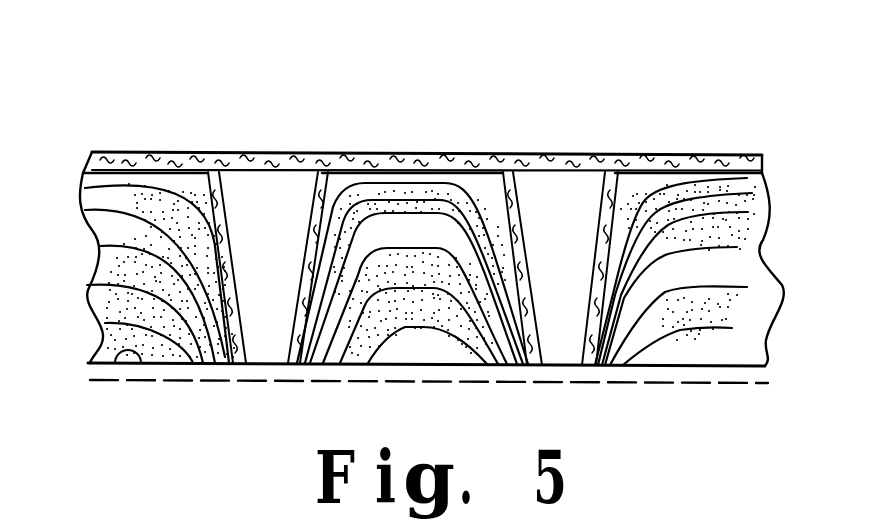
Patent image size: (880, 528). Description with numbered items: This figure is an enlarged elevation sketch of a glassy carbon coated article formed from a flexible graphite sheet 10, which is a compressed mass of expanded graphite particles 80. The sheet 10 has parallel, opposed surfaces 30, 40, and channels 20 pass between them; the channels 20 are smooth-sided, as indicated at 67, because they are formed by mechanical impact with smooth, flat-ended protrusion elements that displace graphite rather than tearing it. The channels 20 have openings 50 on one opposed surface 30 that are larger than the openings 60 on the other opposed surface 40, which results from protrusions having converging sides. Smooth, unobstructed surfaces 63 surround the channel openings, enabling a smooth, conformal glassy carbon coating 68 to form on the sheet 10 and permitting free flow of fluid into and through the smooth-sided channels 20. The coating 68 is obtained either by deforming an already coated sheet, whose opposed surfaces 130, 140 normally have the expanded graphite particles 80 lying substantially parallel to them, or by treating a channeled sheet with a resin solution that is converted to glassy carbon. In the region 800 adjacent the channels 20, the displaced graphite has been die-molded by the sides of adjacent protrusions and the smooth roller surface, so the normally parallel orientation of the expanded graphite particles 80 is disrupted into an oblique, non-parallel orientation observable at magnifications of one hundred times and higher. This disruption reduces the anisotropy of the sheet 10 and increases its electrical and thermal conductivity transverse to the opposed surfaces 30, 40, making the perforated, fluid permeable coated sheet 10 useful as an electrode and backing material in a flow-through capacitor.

The flexible graphite sheet 10 is at (132, 112).
The channels 20 is at (282, 170).
The opposed surface 30 is at (386, 172).
The opposed surface 40 is at (430, 366).
The openings 50 is at (313, 162).
The openings 60 is at (264, 368).
The smooth, unobstructed surfaces 63 is at (229, 367).
The smooth-sided channel walls 67 is at (221, 271).
The glassy carbon coating 68 is at (167, 155).
The expanded graphite particles 80 is at (82, 203).
The opposed surface 130 is at (138, 168).
The opposed surface 140 is at (113, 366).
The region of disrupted particle orientation 800 is at (103, 229).